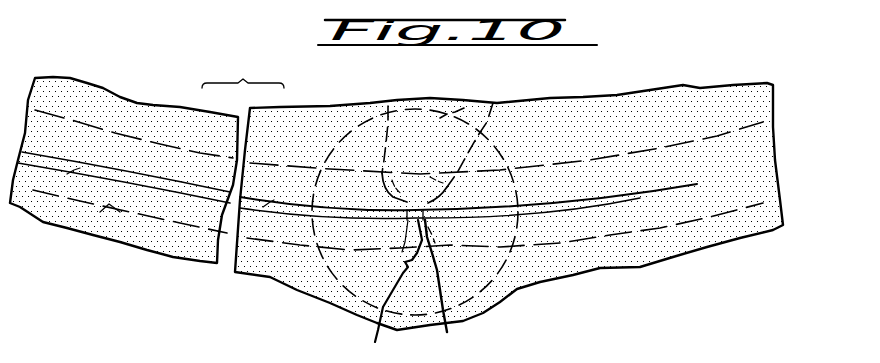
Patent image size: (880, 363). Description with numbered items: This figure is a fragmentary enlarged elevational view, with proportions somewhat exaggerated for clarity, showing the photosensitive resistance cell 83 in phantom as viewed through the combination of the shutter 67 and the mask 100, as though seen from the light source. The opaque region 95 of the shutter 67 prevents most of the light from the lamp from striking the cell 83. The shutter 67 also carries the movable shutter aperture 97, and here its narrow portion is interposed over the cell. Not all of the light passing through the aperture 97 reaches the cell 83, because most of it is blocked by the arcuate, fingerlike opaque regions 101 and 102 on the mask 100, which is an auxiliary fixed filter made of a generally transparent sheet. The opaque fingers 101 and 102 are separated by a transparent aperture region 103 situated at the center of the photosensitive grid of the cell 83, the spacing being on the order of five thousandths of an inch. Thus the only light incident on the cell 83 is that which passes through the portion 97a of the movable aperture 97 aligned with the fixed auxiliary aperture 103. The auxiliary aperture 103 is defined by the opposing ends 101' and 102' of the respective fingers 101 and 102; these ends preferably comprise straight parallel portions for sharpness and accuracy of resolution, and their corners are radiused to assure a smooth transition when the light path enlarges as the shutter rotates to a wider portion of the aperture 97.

The opaque region 95 is at (157, 113).
The shutter aperture 97 is at (177, 190).
The portion of movable aperture 97a is at (404, 291).
The photosensitive resistance cell 83 is at (474, 82).
The shutter 67 is at (563, 110).
The mask 100 is at (509, 197).
The opaque region 101 is at (546, 186).
The end of finger 101' is at (427, 189).
The opaque region 102 is at (133, 190).
The end of finger 102' is at (377, 132).
The transparent aperture region 103 is at (447, 332).